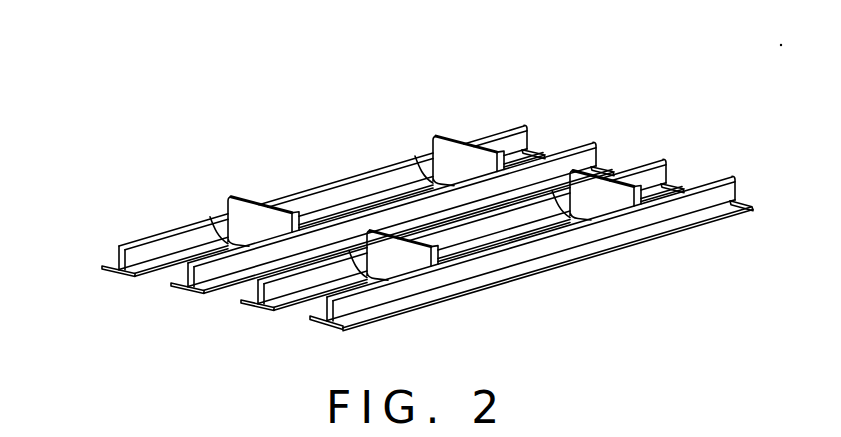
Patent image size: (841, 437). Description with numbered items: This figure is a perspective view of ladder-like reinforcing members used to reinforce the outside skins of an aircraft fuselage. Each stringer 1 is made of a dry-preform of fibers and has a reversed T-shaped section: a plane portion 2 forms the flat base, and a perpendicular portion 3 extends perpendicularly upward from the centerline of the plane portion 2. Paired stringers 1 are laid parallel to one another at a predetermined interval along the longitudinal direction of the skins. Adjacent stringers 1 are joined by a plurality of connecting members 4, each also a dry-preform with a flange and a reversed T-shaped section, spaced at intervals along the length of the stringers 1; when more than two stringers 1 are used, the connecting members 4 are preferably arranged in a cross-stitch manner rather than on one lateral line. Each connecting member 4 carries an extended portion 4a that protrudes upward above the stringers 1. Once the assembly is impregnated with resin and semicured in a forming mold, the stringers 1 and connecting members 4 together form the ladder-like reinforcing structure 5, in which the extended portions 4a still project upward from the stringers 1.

The stringer 1 is at (331, 182).
The plane portion 2 is at (103, 270).
The perpendicular portion 3 is at (150, 246).
The connecting member 4 is at (242, 197).
The extended portion 4a is at (227, 211).
The ladder-like reinforcing structure 5 is at (541, 142).